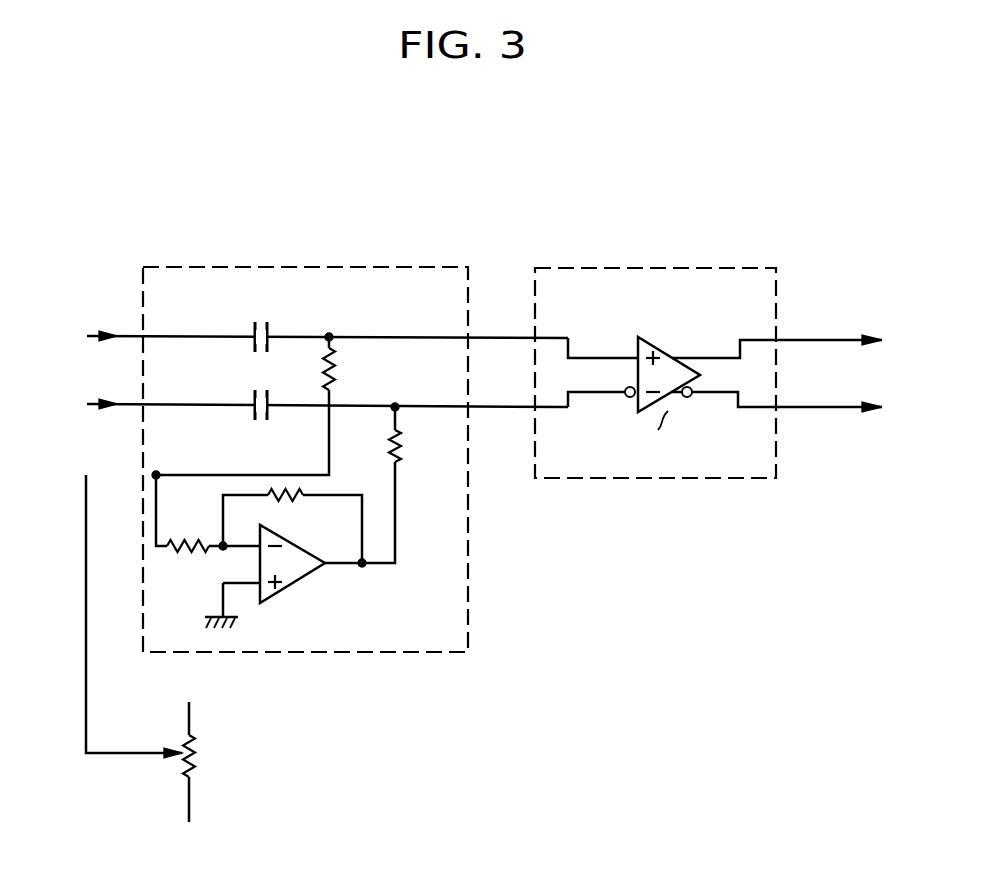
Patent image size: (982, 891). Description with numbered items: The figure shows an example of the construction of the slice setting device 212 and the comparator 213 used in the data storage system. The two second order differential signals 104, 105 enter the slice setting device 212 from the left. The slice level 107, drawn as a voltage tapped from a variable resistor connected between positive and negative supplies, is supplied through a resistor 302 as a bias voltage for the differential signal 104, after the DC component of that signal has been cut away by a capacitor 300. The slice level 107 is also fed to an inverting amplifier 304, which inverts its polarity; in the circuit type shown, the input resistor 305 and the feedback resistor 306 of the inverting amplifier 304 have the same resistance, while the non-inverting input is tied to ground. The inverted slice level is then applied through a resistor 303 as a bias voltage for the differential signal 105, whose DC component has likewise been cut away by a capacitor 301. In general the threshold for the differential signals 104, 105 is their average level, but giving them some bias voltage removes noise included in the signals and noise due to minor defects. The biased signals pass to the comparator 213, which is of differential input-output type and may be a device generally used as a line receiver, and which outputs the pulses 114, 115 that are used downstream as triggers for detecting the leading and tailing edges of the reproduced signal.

The second order differential signal 104 is at (95, 335).
The second order differential signal 105 is at (95, 404).
The slice level 107 is at (142, 756).
The pulse 114 is at (793, 341).
The pulse 115 is at (802, 411).
The slice setting device 212 is at (205, 267).
The comparator 213 is at (590, 267).
The capacitor 300 is at (293, 304).
The capacitor 301 is at (297, 438).
The resistor 302 is at (335, 380).
The resistor 303 is at (405, 449).
The inverting amplifier 304 is at (298, 582).
The input resistor 305 is at (202, 553).
The feedback resistor 306 is at (287, 505).